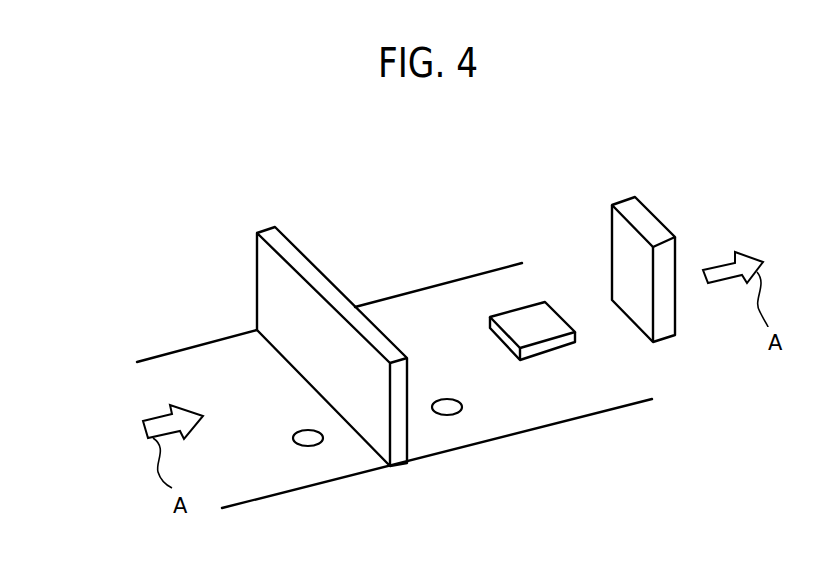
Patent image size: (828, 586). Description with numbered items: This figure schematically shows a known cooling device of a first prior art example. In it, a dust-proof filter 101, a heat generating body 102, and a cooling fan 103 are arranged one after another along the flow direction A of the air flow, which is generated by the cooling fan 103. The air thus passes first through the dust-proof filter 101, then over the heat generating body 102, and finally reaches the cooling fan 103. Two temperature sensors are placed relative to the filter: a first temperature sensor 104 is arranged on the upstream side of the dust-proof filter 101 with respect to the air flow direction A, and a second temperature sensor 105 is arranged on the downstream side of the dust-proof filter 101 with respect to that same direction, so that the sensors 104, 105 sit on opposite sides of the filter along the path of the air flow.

The dust-proof filter 101 is at (277, 297).
The heat generating body 102 is at (510, 310).
The cooling fan 103 is at (622, 245).
The first temperature sensor 104 is at (320, 443).
The second temperature sensor 105 is at (458, 412).